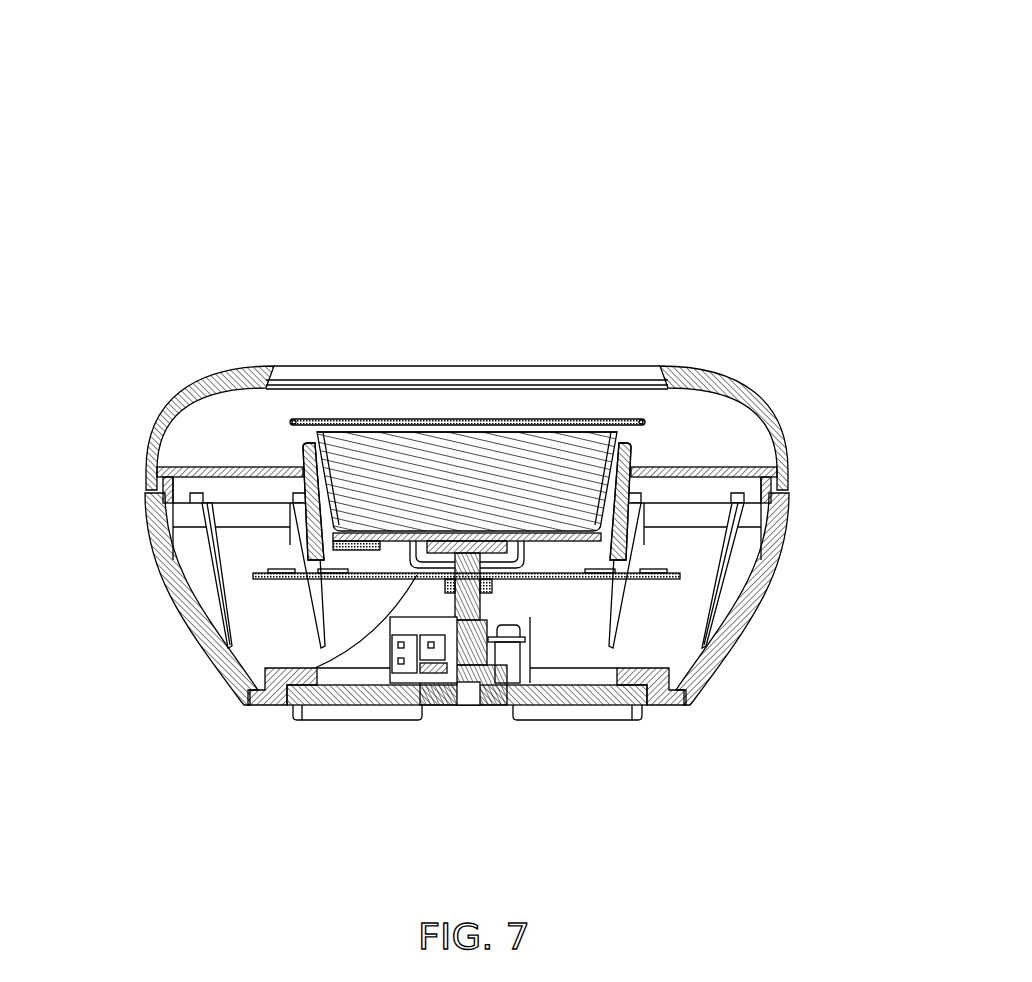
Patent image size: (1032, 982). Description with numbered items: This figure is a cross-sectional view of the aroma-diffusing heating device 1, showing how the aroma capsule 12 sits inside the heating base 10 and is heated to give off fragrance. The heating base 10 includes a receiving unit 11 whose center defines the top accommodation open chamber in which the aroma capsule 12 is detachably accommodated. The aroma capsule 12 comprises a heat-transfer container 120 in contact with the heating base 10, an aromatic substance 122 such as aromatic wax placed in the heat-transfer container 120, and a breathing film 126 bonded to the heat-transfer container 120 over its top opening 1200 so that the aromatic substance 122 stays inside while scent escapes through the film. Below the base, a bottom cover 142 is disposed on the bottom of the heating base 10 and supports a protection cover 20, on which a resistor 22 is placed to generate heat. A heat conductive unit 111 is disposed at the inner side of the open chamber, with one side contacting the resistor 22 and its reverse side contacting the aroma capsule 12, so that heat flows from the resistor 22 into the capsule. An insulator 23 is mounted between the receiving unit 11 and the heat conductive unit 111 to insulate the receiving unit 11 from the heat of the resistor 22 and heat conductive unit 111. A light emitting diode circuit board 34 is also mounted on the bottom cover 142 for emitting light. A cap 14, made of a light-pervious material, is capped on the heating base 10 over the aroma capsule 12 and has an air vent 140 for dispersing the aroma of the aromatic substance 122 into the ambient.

The aroma-diffusing heating device 1 is at (520, 150).
The heating base 10 is at (160, 562).
The receiving unit 11 is at (303, 481).
The aroma capsule 12 is at (573, 382).
The cap 14 is at (157, 428).
The protection cover 20 is at (491, 552).
The resistor 22 is at (240, 704).
The insulator 23 is at (325, 540).
The light emitting diode circuit board 34 is at (384, 578).
The heat conductive unit 111 is at (530, 543).
The heat-transfer container 120 is at (618, 434).
The aromatic substance 122 is at (568, 452).
The breathing film 126 is at (458, 418).
The air vent 140 is at (403, 366).
The bottom cover 142 is at (382, 698).
The top opening 1200 is at (380, 421).